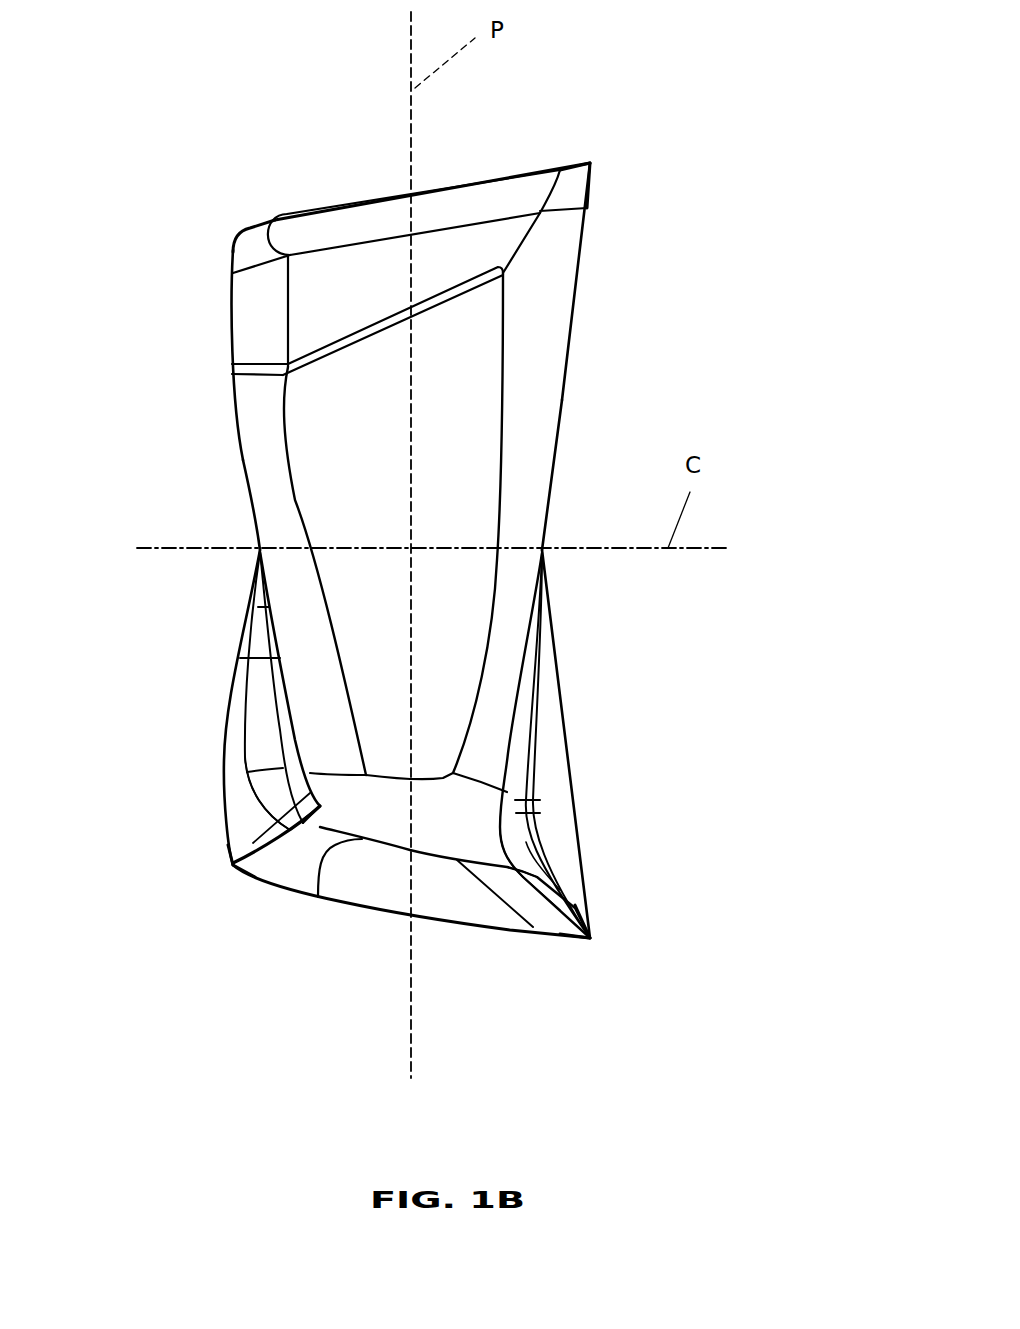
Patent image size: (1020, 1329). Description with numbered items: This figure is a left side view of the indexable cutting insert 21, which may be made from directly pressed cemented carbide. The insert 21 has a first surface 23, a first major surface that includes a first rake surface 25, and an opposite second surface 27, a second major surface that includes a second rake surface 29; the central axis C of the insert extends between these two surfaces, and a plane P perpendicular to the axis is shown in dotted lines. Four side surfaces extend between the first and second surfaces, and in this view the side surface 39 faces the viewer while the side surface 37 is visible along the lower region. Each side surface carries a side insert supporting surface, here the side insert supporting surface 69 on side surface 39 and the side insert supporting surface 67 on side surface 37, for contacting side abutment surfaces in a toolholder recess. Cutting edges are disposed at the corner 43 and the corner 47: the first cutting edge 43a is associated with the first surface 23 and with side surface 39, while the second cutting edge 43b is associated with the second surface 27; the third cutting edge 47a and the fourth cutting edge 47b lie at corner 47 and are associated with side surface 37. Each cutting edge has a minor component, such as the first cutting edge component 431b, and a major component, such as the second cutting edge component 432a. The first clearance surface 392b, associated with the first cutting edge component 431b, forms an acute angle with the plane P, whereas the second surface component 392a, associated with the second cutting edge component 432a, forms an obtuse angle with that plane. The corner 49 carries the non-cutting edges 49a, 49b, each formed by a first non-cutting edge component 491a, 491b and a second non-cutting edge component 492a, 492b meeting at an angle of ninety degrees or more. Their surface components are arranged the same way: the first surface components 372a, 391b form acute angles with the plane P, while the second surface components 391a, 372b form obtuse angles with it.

The cutting insert 21 is at (692, 170).
The first surface 23 is at (540, 652).
The first rake surface 25 is at (527, 860).
The second surface 27 is at (257, 648).
The second rake surface 29 is at (242, 800).
The side surface 37 is at (470, 910).
The side surface 39 is at (362, 490).
The corner 43 is at (363, 220).
The first cutting edge 43a is at (591, 160).
The second cutting edge 43b is at (232, 233).
The corner 47 is at (295, 897).
The third cutting edge 47a is at (592, 940).
The fourth cutting edge 47b is at (234, 873).
The corner 49 is at (398, 850).
The non-cutting edge 49a is at (508, 847).
The non-cutting edge 49b is at (312, 787).
The side insert supporting surface 67 is at (375, 885).
The side insert supporting surface 69 is at (352, 438).
The first surface component 372a is at (512, 892).
The second surface component 372b is at (322, 830).
The second surface component 391a is at (492, 768).
The first surface component 391b is at (340, 745).
The second surface component 392a is at (558, 233).
The first clearance surface 392b is at (257, 292).
The first cutting edge component 431b is at (223, 315).
The second cutting edge component 432a is at (580, 265).
The first non-cutting edge component 491a is at (533, 878).
The first non-cutting edge component 491b is at (297, 728).
The second non-cutting edge component 492a is at (508, 758).
The second non-cutting edge component 492b is at (300, 825).